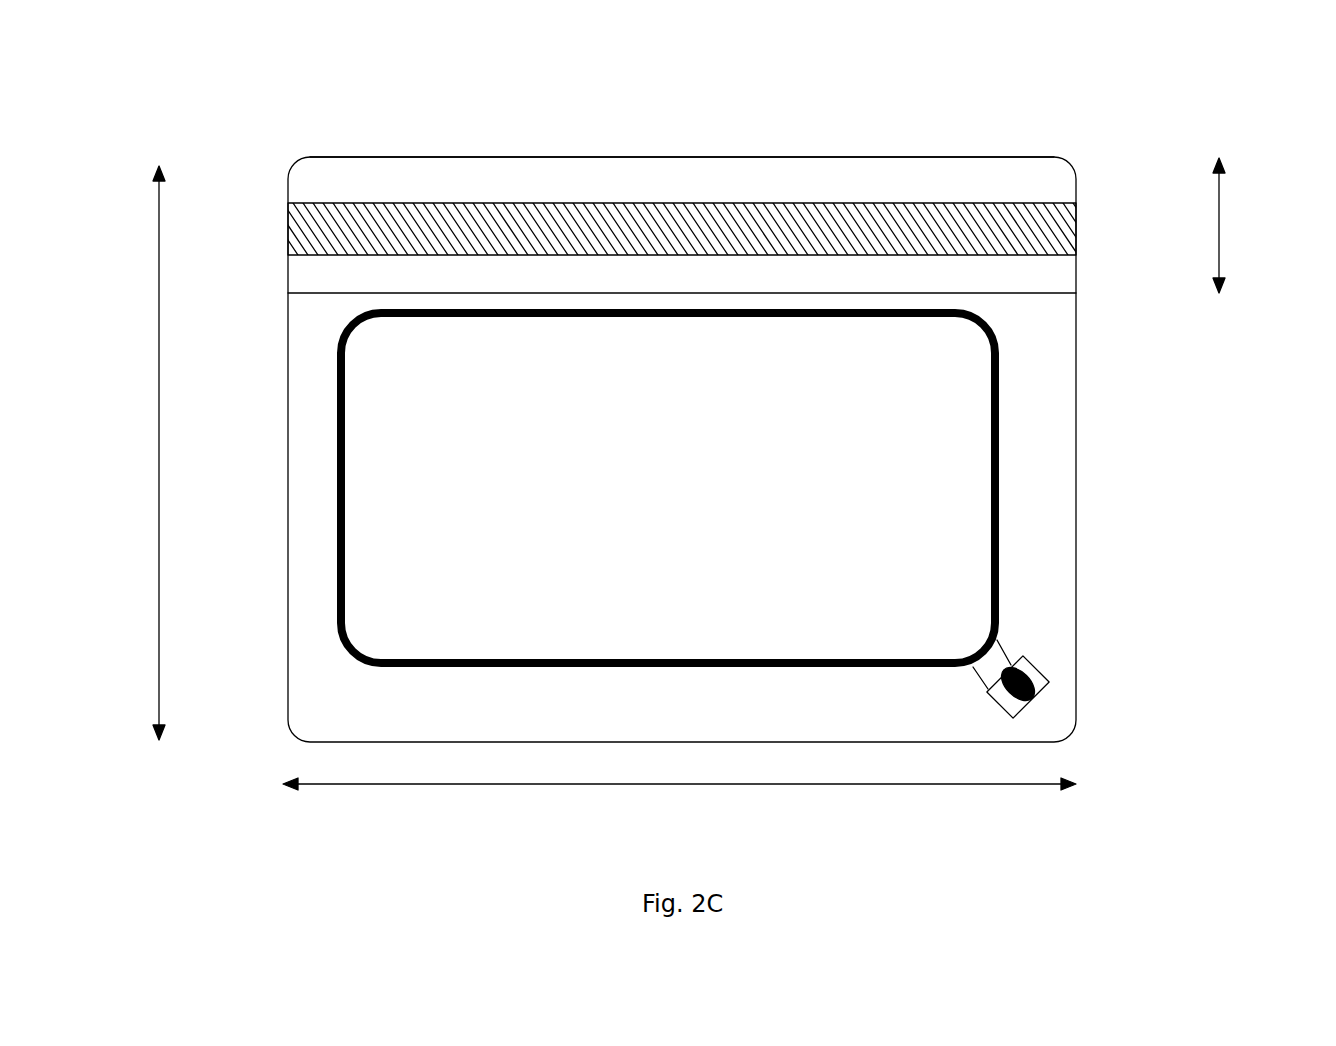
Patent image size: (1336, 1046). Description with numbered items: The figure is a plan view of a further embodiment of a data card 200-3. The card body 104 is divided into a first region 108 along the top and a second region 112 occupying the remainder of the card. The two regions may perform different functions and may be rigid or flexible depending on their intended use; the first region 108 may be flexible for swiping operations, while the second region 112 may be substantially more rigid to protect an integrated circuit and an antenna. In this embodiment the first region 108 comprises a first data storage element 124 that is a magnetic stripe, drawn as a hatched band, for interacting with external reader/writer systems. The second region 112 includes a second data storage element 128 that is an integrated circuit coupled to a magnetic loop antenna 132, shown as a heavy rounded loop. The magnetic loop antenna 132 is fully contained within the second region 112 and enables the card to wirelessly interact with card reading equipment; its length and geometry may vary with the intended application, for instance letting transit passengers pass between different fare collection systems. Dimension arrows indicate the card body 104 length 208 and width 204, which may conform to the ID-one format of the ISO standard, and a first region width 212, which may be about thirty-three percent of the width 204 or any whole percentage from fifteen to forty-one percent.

The data card 200-3 is at (455, 117).
The card body 104 is at (1077, 293).
The first region 108 is at (815, 157).
The second region 112 is at (1077, 525).
The first data storage element 124 is at (970, 233).
The second data storage element 128 is at (1036, 683).
The magnetic loop antenna 132 is at (355, 662).
The width 204 is at (159, 417).
The length 208 is at (656, 785).
The first region width 212 is at (1219, 228).